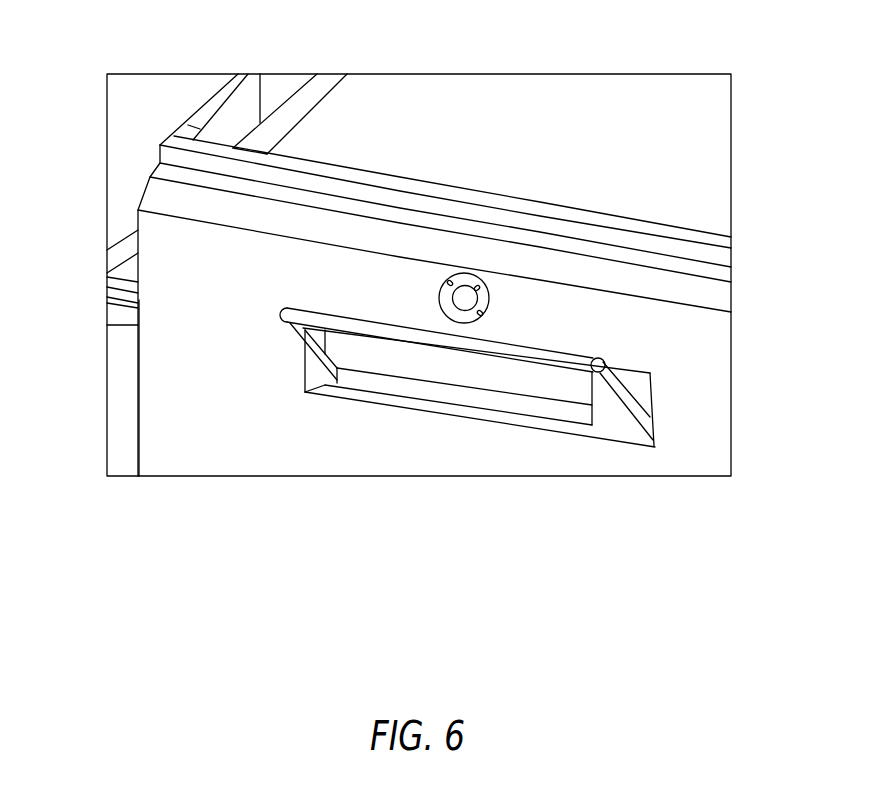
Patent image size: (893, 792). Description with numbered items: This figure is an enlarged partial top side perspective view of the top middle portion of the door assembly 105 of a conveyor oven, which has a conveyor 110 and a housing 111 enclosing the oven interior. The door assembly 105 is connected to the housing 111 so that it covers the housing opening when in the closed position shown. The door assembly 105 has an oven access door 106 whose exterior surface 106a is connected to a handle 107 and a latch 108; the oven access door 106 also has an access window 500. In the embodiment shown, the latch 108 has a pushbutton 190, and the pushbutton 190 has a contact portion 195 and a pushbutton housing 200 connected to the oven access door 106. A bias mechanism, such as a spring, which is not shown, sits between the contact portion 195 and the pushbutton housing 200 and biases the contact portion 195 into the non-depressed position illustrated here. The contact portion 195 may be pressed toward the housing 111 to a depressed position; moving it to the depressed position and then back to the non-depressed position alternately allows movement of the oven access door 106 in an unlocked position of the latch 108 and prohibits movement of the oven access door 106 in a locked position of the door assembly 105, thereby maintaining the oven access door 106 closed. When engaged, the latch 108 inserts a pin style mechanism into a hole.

The door assembly 105 is at (138, 448).
The oven access door 106 is at (710, 328).
The exterior surface 106a is at (497, 458).
The handle 107 is at (517, 353).
The latch 108 is at (453, 305).
The conveyor 110 is at (135, 313).
The housing 111 is at (650, 177).
The pushbutton 190 is at (488, 292).
The contact portion 195 is at (490, 315).
The pushbutton housing 200 is at (450, 282).
The access window 500 is at (602, 420).